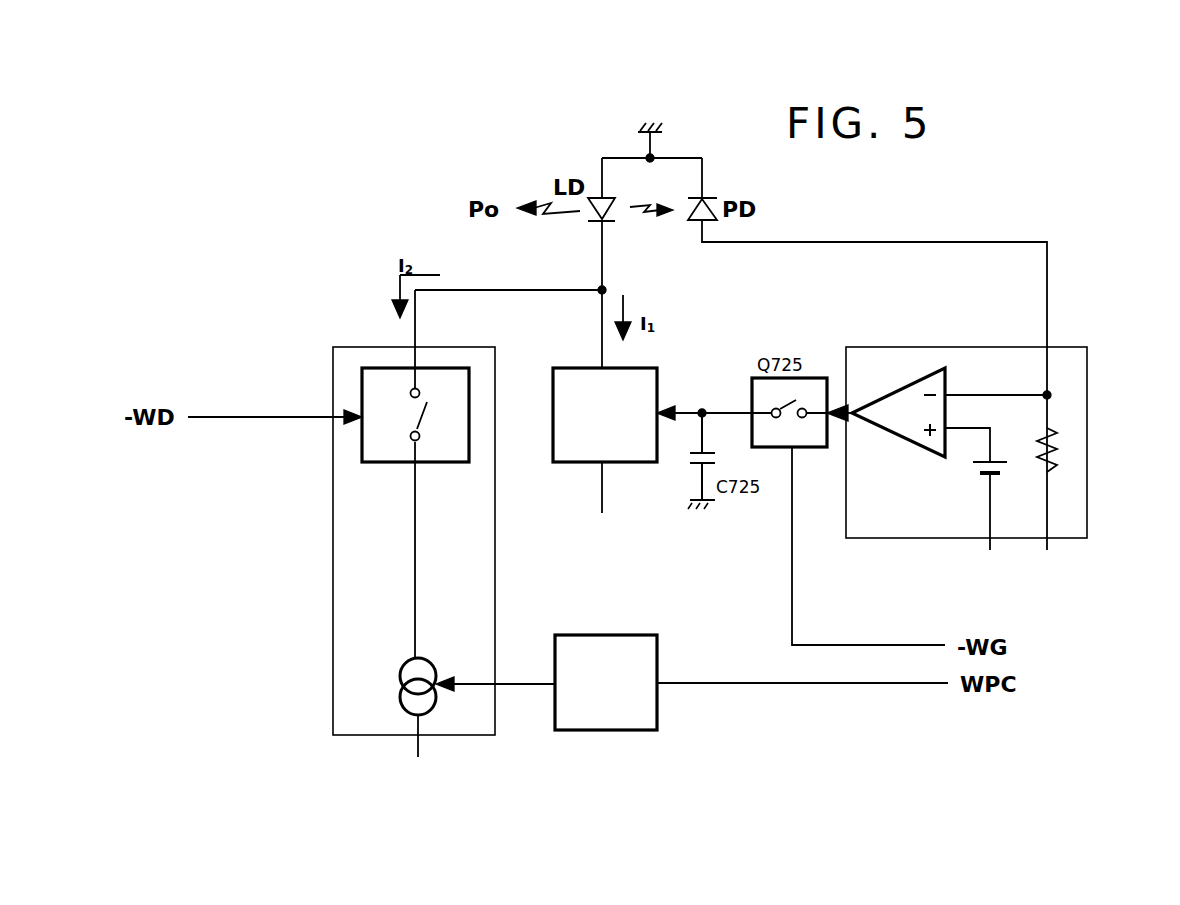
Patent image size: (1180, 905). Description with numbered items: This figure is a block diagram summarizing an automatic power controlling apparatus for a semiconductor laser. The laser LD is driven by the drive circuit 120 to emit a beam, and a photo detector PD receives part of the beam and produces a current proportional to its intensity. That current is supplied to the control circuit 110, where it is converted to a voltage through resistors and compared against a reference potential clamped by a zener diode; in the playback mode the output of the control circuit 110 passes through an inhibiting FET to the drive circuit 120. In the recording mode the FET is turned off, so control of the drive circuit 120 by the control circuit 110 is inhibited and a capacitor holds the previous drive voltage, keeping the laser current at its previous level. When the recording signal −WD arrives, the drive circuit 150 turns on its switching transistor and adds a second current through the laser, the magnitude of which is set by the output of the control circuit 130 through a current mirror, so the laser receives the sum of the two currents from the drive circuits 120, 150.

The control circuit 110 is at (996, 455).
The drive circuit 120 is at (596, 443).
The control circuit 130 is at (692, 670).
The drive circuit 150 is at (414, 560).